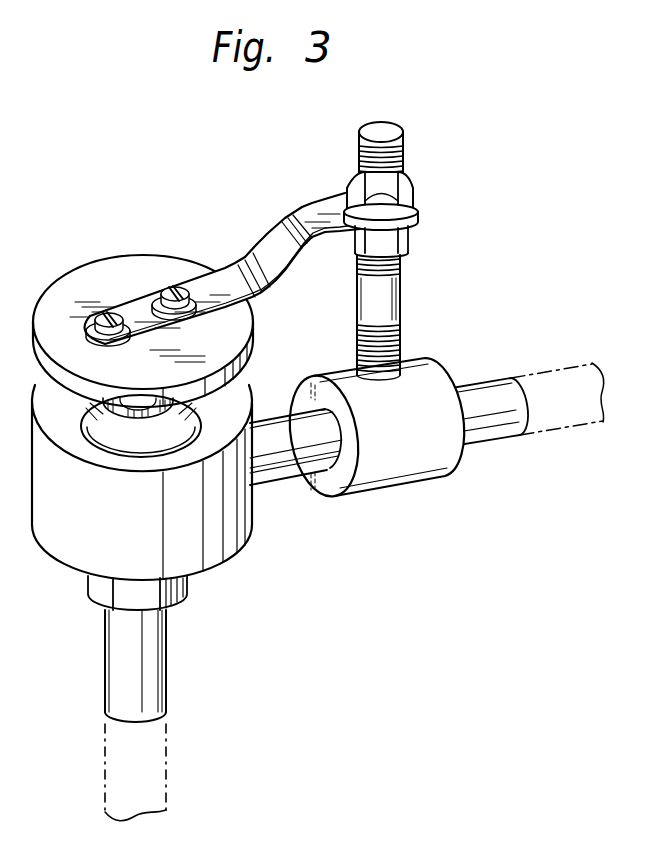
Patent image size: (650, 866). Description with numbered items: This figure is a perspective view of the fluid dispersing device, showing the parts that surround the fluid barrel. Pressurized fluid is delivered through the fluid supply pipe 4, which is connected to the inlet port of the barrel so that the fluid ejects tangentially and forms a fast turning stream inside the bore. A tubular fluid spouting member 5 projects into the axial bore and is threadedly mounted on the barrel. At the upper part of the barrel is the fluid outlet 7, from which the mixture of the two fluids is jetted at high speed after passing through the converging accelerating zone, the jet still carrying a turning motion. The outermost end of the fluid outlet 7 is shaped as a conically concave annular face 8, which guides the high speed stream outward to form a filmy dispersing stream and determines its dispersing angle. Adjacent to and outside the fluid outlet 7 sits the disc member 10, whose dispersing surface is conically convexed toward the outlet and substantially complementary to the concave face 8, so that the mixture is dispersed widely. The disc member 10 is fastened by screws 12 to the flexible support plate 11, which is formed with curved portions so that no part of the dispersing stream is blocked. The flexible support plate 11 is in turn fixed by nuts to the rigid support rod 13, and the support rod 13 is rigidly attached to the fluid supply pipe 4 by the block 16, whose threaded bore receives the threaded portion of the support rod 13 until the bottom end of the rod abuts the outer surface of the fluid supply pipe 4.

The fluid supply pipe 4 is at (288, 478).
The tubular fluid spouting member 5 is at (152, 655).
The fluid outlet 7 is at (195, 428).
The conically concave annular face 8 is at (82, 412).
The disc member 10 is at (52, 297).
The flexible support plate 11 is at (288, 217).
The screws 12 is at (113, 312).
The rigid support rod 13 is at (397, 289).
The block 16 is at (396, 488).